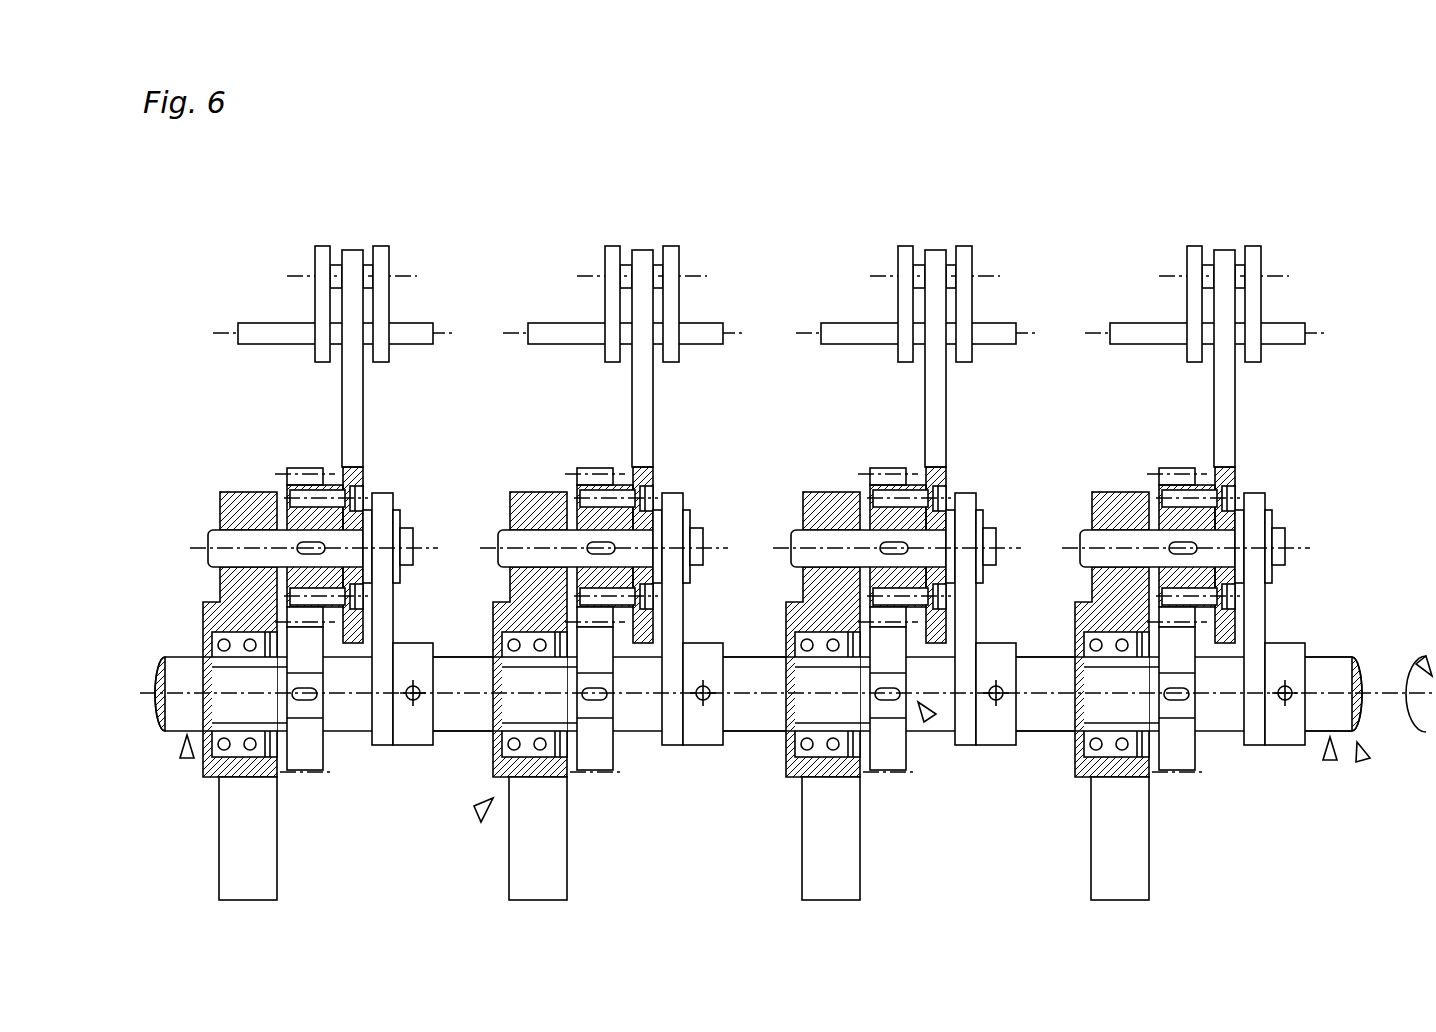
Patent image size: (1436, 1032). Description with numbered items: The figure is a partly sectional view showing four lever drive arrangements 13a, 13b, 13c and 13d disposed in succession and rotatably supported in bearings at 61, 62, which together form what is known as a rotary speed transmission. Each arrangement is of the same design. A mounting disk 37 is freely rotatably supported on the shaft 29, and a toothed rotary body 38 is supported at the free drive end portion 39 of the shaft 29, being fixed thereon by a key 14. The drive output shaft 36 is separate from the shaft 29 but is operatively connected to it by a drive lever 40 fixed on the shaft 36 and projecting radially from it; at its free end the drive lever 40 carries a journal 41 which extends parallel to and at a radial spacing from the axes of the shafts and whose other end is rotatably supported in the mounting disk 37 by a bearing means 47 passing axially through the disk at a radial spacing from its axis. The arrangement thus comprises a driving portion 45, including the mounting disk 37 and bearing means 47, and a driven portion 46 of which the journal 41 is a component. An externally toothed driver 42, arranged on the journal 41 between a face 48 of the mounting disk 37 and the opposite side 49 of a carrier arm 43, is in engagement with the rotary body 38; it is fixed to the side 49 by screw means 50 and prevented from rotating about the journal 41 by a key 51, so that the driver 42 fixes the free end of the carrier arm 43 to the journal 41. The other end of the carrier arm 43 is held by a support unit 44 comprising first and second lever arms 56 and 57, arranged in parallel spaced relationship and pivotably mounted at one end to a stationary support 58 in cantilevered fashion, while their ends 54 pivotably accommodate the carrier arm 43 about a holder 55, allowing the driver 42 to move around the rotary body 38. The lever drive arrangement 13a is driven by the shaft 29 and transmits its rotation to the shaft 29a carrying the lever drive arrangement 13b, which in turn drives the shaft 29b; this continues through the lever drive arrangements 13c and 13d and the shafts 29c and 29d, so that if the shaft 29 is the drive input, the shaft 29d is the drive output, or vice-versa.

The lever drive arrangement 13a is at (330, 509).
The lever drive arrangement 13b is at (625, 501).
The lever drive arrangement 13c is at (892, 497).
The lever drive arrangement 13d is at (1212, 497).
The key 14 is at (625, 797).
The shaft 29 is at (165, 677).
The shaft 29a is at (477, 720).
The shaft 29b is at (762, 720).
The shaft 29c is at (1062, 708).
The shaft 29d is at (1318, 717).
The drive output shaft 36 is at (1343, 670).
The mounting disk 37 is at (1084, 838).
The rotary body 38 is at (598, 761).
The free drive end portion 39 is at (946, 800).
The drive lever 40 is at (984, 581).
The journal 41 is at (838, 513).
The driver 42 is at (583, 443).
The carrier arm 43 is at (353, 390).
The support unit 44 is at (1309, 358).
The driving portion 45 is at (478, 813).
The driven portion 46 is at (1360, 760).
The bearing means 47 is at (1120, 456).
The face 48 is at (277, 828).
The side 49 is at (342, 428).
The screw means 50 is at (1236, 469).
The key 51 is at (838, 471).
The ends 54 is at (713, 289).
The holder 55 is at (1290, 303).
The first lever arm 56 is at (1000, 292).
The second lever arm 57 is at (323, 268).
The stationary support 58 is at (606, 295).
The bearing 61 is at (187, 757).
The bearing 62 is at (1330, 760).